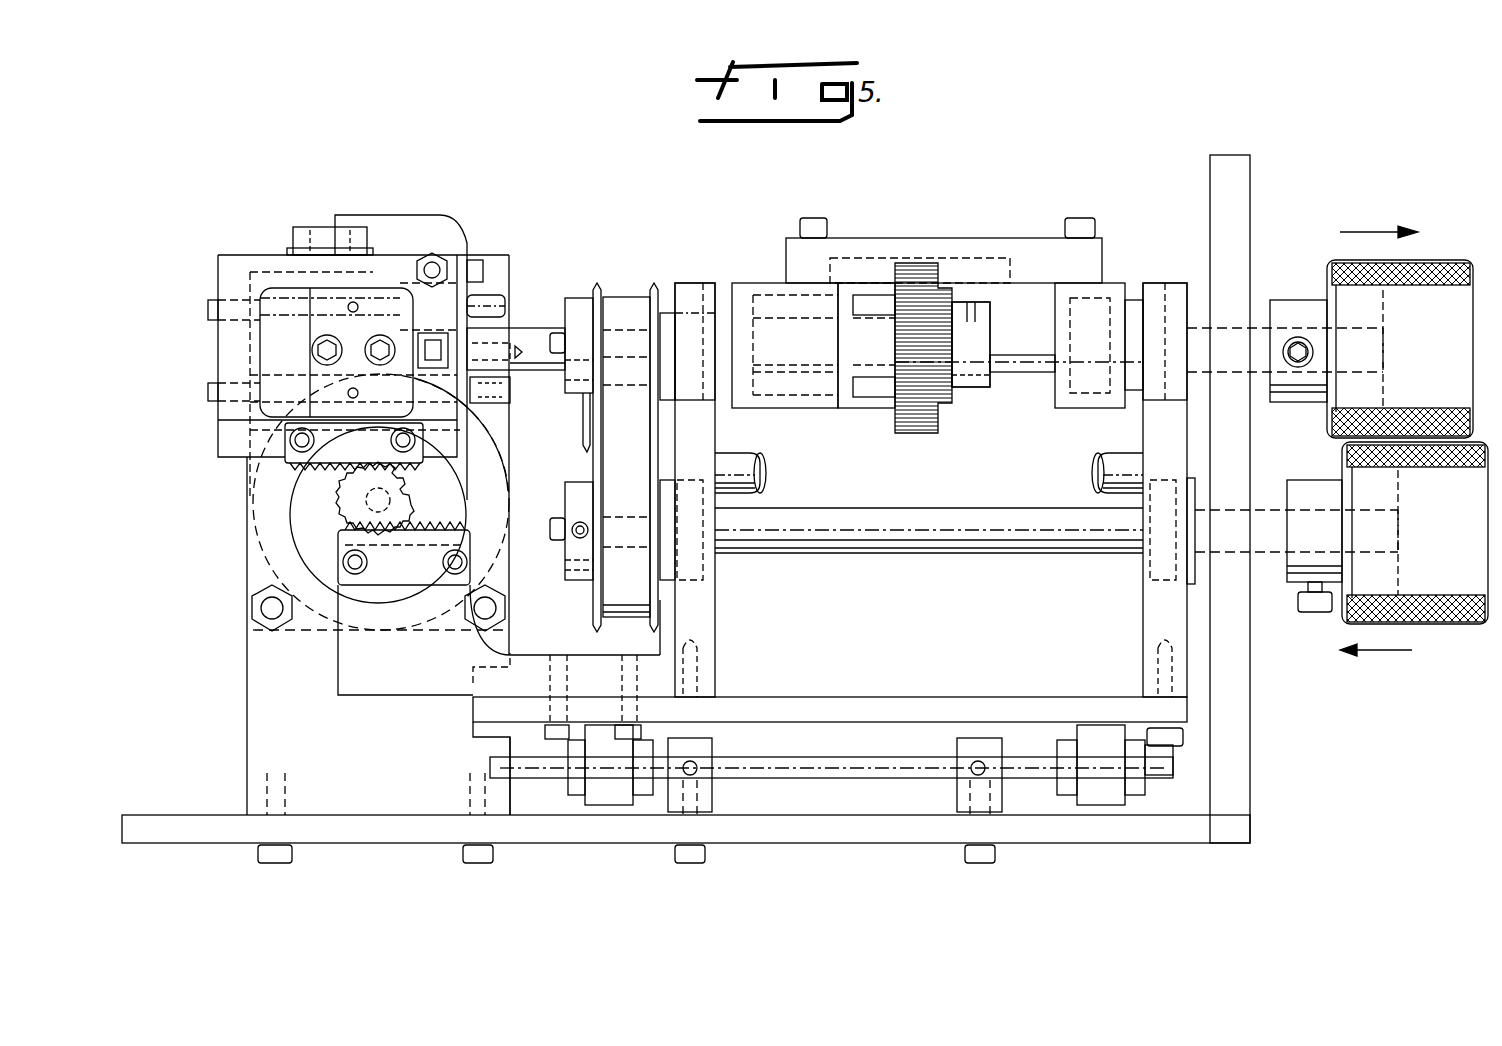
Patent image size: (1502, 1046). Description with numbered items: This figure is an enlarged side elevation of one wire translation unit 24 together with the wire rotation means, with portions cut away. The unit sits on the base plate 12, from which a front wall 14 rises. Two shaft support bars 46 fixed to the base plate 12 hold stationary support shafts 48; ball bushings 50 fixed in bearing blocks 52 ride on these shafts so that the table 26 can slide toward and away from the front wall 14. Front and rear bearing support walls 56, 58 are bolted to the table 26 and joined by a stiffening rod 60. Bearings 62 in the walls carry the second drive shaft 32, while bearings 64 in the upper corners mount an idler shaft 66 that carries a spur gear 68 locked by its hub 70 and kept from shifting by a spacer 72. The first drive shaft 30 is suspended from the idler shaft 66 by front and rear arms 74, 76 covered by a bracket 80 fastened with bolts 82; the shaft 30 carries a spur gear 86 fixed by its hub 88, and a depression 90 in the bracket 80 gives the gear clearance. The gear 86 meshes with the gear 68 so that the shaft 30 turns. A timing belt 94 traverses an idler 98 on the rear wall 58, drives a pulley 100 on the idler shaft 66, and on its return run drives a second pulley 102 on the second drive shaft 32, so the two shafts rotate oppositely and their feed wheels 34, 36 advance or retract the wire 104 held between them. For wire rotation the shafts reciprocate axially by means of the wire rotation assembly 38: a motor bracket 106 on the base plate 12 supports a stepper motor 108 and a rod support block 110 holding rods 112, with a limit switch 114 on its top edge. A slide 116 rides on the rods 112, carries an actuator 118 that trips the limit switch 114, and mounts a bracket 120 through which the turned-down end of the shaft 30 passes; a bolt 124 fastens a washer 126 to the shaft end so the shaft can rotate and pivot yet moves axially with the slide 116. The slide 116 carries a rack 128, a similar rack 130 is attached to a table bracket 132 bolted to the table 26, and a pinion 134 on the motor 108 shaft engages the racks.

The base plate 12 is at (172, 826).
The front wall 14 is at (1240, 160).
The right wire translation unit 24 is at (1014, 158).
The table 26 is at (920, 697).
The first drive shaft 30 is at (532, 328).
The second drive shaft 32 is at (990, 548).
The feed wheel 34 is at (1330, 270).
The feed wheel 36 is at (1450, 626).
The clamp assembly 38 is at (238, 598).
The shaft support bars 46 is at (712, 790).
The support shafts 48 is at (842, 780).
The ball bushings 50 is at (577, 798).
The bearing blocks 52 is at (605, 805).
The front bearing support wall 56 is at (1143, 628).
The rear bearing support wall 58 is at (715, 622).
The stiffening rod 60 is at (766, 470).
The bearings 62 is at (718, 568).
The bearings 64 is at (703, 283).
The idler shaft 66 is at (1045, 372).
The spur gear 68 is at (945, 420).
The spur gear hub 70 is at (975, 388).
The spacer 72 is at (878, 378).
The front arm 74 is at (1120, 290).
The rear arm 76 is at (790, 410).
The bracket 80 is at (790, 240).
The bolts 82 is at (812, 218).
The spur gear 86 is at (905, 433).
The spur gear hub 88 is at (878, 300).
The depression 90 is at (1005, 262).
The timing belt 94 is at (625, 297).
The idler 98 is at (587, 435).
The pulley 100 is at (600, 283).
The second pulley 102 is at (585, 608).
The wire 104 is at (1342, 452).
The motor bracket 106 is at (247, 710).
The stepper motor 108 is at (255, 552).
The rod support block 110 is at (312, 333).
The rods 112 is at (210, 318).
The limit switch 114 is at (305, 228).
The slide 116 is at (218, 262).
The actuator 118 is at (405, 218).
The bracket 120 is at (462, 258).
The bolt 124 is at (448, 365).
The washer 126 is at (468, 320).
The rack 128 is at (285, 462).
The rack 130 is at (470, 540).
The table bracket 132 is at (425, 690).
The pinion 134 is at (350, 490).